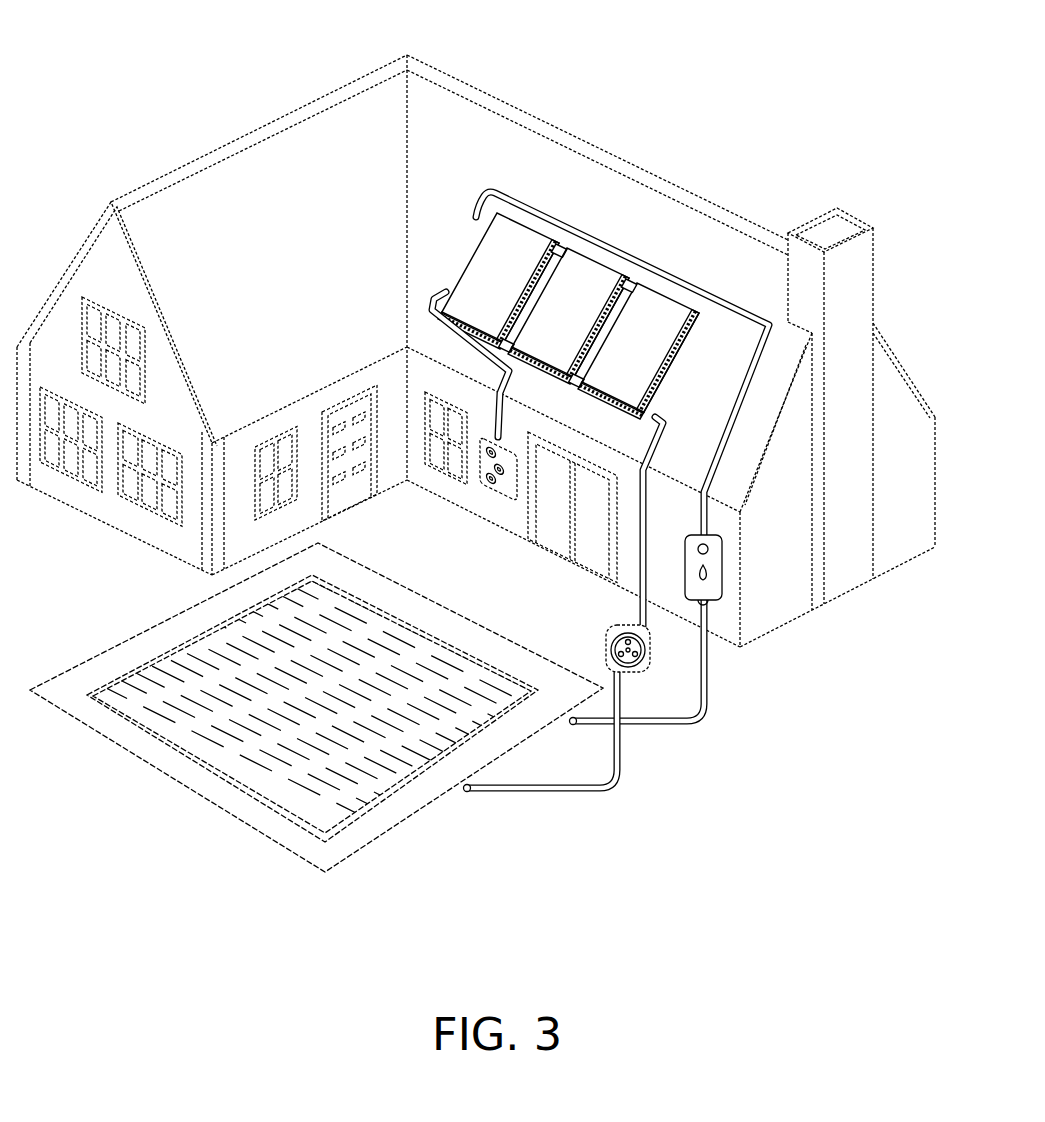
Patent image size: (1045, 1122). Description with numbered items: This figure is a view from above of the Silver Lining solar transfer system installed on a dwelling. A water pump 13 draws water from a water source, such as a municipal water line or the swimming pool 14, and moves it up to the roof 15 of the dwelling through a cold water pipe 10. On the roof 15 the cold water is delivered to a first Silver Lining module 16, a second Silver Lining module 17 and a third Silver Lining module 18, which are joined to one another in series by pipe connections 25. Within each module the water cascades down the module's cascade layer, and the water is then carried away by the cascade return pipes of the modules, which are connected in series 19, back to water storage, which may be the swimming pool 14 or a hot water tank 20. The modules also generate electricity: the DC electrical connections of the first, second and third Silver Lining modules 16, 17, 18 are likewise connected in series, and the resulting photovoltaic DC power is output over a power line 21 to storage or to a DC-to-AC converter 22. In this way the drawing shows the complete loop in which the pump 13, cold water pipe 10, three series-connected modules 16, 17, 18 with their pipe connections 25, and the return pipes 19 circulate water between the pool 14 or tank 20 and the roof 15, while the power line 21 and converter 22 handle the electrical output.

The cold water pipe 10 is at (582, 222).
The water pump 13 is at (715, 589).
The swimming pool 14 is at (82, 710).
The roof 15 is at (441, 126).
The first Silver Lining module 16 is at (507, 295).
The second Silver Lining module 17 is at (574, 329).
The third Silver Lining module 18 is at (647, 384).
The cascade return pipes connected in series 19 is at (643, 500).
The hot water tank 20 is at (611, 648).
The power line 21 is at (428, 307).
The DC-to-AC converter 22 is at (498, 489).
The pipe connections 25 is at (630, 287).